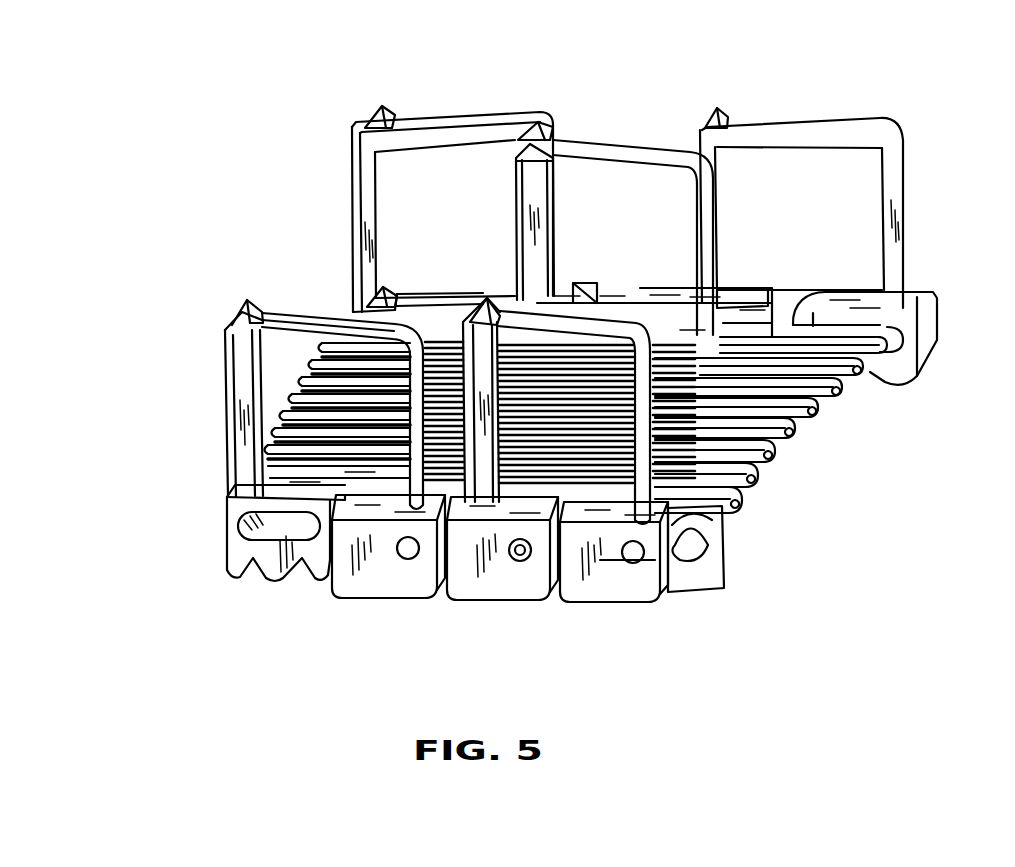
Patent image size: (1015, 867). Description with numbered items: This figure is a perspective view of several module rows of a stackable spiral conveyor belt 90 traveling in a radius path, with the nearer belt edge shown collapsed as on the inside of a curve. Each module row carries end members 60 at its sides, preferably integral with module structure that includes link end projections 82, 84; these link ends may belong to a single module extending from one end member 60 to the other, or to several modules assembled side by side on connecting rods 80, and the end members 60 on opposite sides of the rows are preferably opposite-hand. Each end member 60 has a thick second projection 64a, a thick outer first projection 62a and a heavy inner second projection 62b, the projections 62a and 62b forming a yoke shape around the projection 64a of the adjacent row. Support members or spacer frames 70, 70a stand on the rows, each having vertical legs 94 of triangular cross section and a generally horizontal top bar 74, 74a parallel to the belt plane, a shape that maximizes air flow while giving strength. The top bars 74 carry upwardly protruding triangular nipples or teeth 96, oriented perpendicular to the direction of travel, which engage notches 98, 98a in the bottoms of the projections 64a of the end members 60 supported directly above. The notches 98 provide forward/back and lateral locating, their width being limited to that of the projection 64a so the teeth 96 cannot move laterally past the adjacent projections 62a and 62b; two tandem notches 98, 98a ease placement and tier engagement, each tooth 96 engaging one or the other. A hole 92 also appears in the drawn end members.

The end member 60 is at (651, 484).
The outer first projection 62a is at (632, 588).
The inner second projection 62b is at (700, 548).
The second projection 64a is at (237, 547).
The spacer frame 70 is at (547, 278).
The spacer frame 70a is at (614, 189).
The top bar 74 is at (462, 118).
The top bar 74a is at (620, 143).
The connecting rod 80 is at (681, 512).
The link end projection 82 is at (740, 500).
The link end projection 84 is at (290, 407).
The belt 90 is at (210, 564).
The hole 92 is at (522, 548).
The vertical leg 94 is at (355, 200).
The nipple or tooth 96 is at (380, 110).
The notch 98 is at (253, 568).
The notch 98a is at (302, 568).